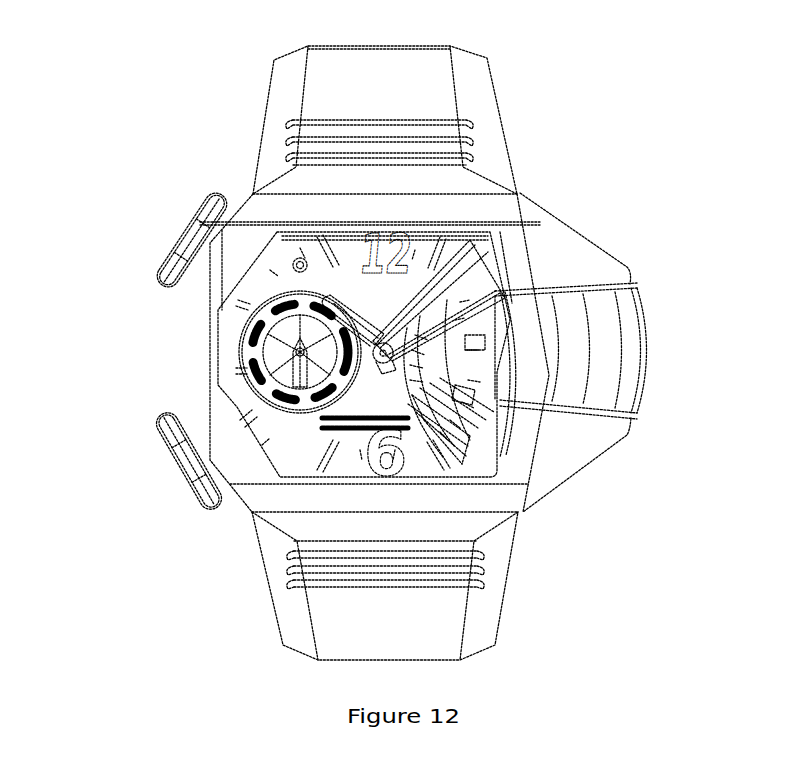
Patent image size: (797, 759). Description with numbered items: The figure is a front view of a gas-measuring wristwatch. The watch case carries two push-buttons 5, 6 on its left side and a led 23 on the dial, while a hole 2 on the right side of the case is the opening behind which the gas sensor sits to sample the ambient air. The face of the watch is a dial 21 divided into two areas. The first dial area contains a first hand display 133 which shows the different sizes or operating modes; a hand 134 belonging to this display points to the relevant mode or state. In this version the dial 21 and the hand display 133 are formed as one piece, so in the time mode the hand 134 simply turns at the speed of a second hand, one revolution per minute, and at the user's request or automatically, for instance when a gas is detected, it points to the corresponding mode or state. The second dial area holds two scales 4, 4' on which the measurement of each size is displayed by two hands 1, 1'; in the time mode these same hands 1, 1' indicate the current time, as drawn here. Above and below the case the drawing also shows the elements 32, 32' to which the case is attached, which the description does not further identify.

The hand 1 is at (436, 238).
The hand 1' is at (513, 281).
The hole 2 is at (625, 330).
The scale 4 is at (562, 381).
The scale 4' is at (556, 475).
The push-button 5 is at (188, 487).
The push-button 6 is at (165, 257).
The dial 21 is at (471, 255).
The led 23 is at (297, 263).
The upper strap 32 is at (328, 120).
The lower strap 32' is at (306, 586).
The first hand display 133 is at (250, 340).
The hand 134 is at (303, 360).